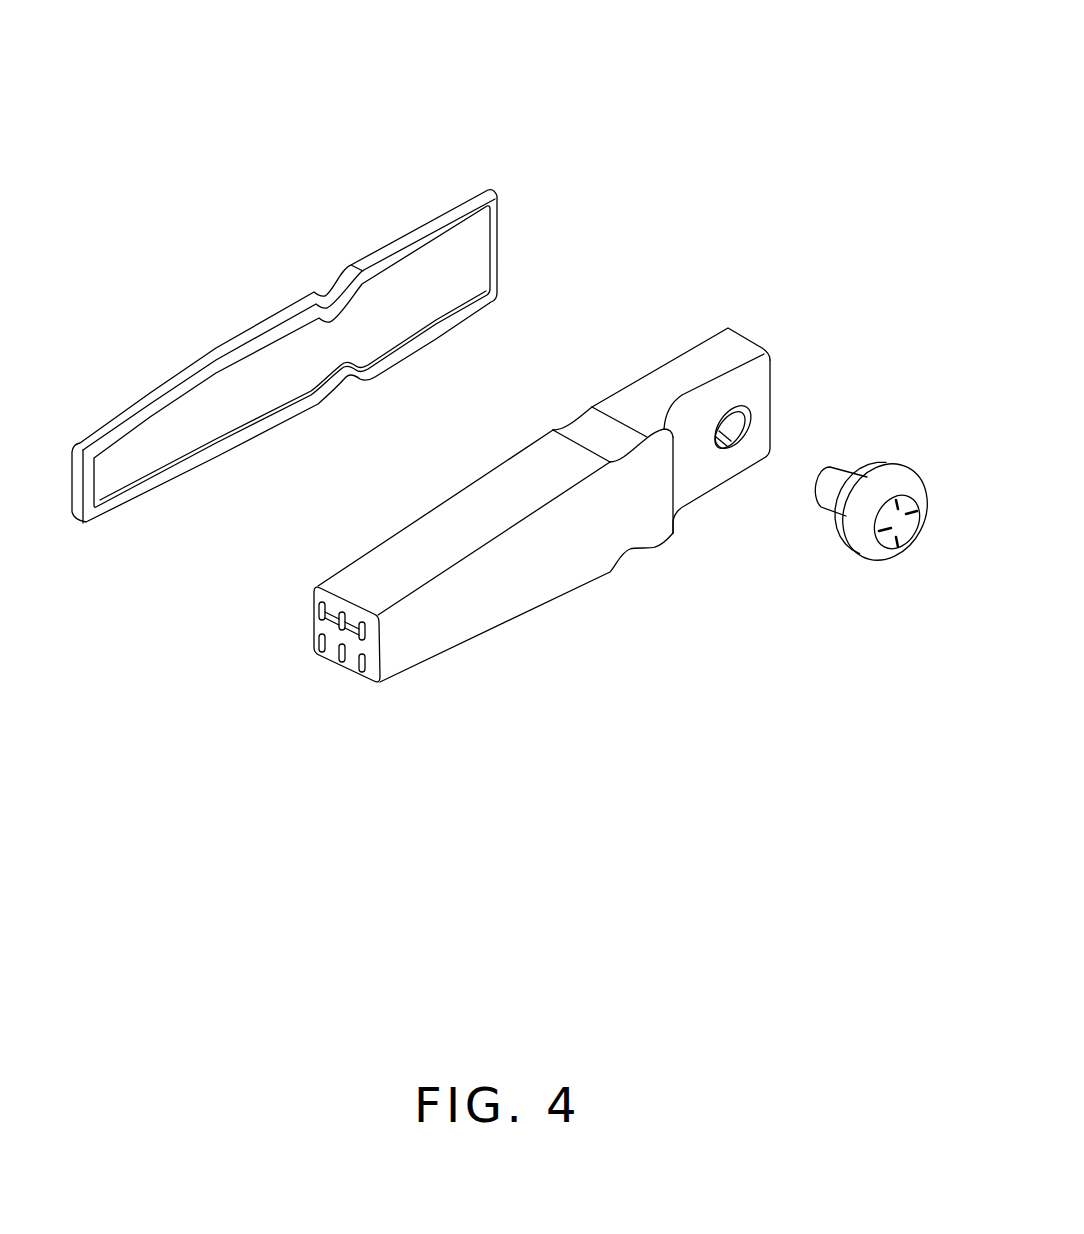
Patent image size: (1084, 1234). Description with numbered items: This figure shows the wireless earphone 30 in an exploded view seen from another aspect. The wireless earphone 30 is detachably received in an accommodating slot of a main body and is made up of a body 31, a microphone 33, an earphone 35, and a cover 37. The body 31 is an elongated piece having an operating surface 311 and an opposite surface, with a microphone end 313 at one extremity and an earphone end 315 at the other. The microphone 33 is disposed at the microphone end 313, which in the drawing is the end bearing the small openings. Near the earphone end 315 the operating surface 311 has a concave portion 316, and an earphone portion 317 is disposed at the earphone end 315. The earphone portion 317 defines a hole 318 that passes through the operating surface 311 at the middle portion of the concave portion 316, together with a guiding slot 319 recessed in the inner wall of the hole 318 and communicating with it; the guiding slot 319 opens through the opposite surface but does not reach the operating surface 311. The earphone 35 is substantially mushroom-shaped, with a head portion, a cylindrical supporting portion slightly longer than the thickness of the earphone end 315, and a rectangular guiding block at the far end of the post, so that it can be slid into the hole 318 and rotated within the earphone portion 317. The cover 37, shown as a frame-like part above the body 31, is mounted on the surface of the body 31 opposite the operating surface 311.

The wireless earphone 30 is at (473, 55).
The body 31 is at (695, 272).
The operating surface 311 is at (467, 623).
The microphone end 313 is at (537, 455).
The earphone end 315 is at (668, 380).
The concave portion 316 is at (695, 483).
The earphone portion 317 is at (857, 326).
The hole 318 is at (750, 409).
The guiding slot 319 is at (742, 444).
The microphone 33 is at (352, 658).
The earphone 35 is at (862, 543).
The cover 37 is at (408, 238).